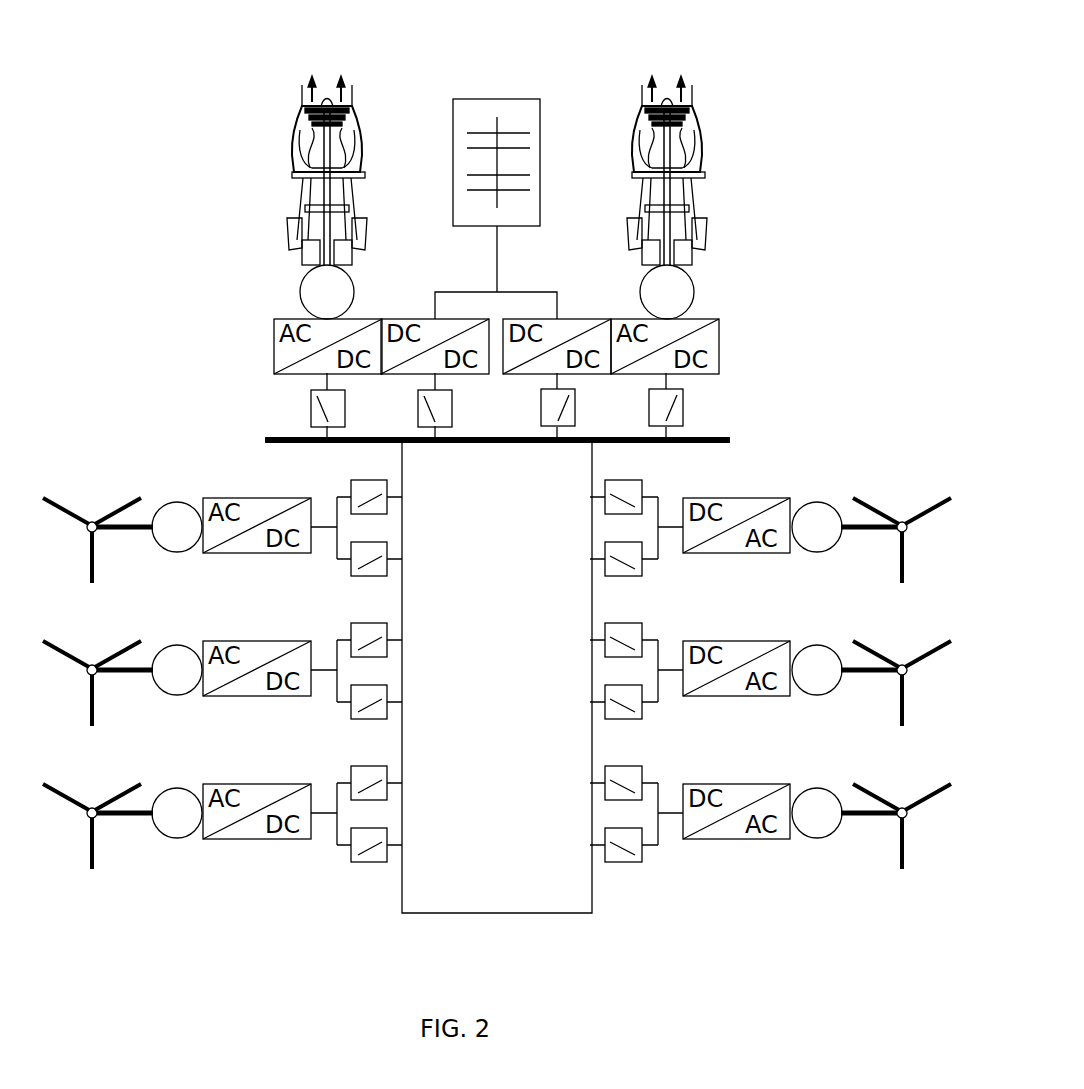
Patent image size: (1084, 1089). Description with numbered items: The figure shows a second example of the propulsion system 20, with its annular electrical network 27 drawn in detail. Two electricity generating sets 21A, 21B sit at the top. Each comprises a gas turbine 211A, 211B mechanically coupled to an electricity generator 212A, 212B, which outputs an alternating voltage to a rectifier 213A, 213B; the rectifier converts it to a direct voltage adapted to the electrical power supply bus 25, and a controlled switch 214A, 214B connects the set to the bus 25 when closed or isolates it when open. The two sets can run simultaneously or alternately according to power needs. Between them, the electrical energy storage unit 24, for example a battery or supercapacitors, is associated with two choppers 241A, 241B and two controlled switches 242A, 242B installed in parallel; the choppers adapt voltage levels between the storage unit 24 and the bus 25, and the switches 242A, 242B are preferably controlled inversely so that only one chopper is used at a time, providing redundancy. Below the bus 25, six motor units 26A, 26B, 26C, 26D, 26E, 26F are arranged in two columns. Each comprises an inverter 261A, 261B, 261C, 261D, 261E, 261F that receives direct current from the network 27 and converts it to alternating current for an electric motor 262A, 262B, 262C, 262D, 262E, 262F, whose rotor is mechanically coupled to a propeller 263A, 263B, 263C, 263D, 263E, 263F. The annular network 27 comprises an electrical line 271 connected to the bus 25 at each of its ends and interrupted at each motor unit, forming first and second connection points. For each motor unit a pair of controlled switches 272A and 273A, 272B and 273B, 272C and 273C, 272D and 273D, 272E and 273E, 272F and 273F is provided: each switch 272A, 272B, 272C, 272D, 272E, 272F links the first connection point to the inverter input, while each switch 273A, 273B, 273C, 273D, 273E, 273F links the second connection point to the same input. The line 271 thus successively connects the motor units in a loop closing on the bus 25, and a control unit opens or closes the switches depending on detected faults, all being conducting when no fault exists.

The propulsion system 20 is at (872, 86).
The electricity generating set 21A is at (252, 78).
The electricity generating set 21B is at (722, 78).
The gas turbine 211A is at (356, 100).
The gas turbine 211B is at (636, 100).
The electricity generator 212A is at (303, 275).
The electricity generator 212B is at (690, 272).
The rectifier 213A is at (278, 320).
The rectifier 213B is at (716, 320).
The controlled switch 214A is at (311, 408).
The controlled switch 214B is at (683, 408).
The electrical energy storage unit 24 is at (541, 130).
The chopper 241A is at (408, 318).
The chopper 241B is at (583, 318).
The controlled switch 242A is at (418, 410).
The controlled switch 242B is at (574, 408).
The electrical power supply bus 25 is at (500, 444).
The annular electrical network 27 is at (370, 925).
The electrical line 271 is at (560, 913).
The motor unit 26A is at (908, 493).
The motor unit 26B is at (911, 636).
The motor unit 26C is at (909, 780).
The motor unit 26D is at (92, 780).
The motor unit 26E is at (92, 636).
The motor unit 26F is at (92, 496).
The inverter 261A is at (690, 555).
The inverter 261B is at (690, 698).
The inverter 261C is at (690, 841).
The inverter 261D is at (255, 841).
The inverter 261E is at (255, 698).
The inverter 261F is at (255, 555).
The electric motor 262A is at (815, 553).
The electric motor 262B is at (815, 696).
The electric motor 262C is at (815, 839).
The electric motor 262D is at (175, 839).
The electric motor 262E is at (175, 696).
The electric motor 262F is at (175, 553).
The propeller 263A is at (897, 533).
The propeller 263B is at (897, 676).
The propeller 263C is at (897, 819).
The propeller 263D is at (98, 819).
The propeller 263E is at (98, 676).
The propeller 263F is at (98, 533).
The controlled switch 272A is at (605, 502).
The controlled switch 272B is at (605, 645).
The controlled switch 272C is at (605, 788).
The controlled switch 272D is at (387, 835).
The controlled switch 272E is at (387, 692).
The controlled switch 272F is at (387, 549).
The controlled switch 273A is at (605, 549).
The controlled switch 273B is at (605, 692).
The controlled switch 273C is at (605, 835).
The controlled switch 273D is at (387, 788).
The controlled switch 273E is at (387, 645).
The controlled switch 273F is at (387, 502).